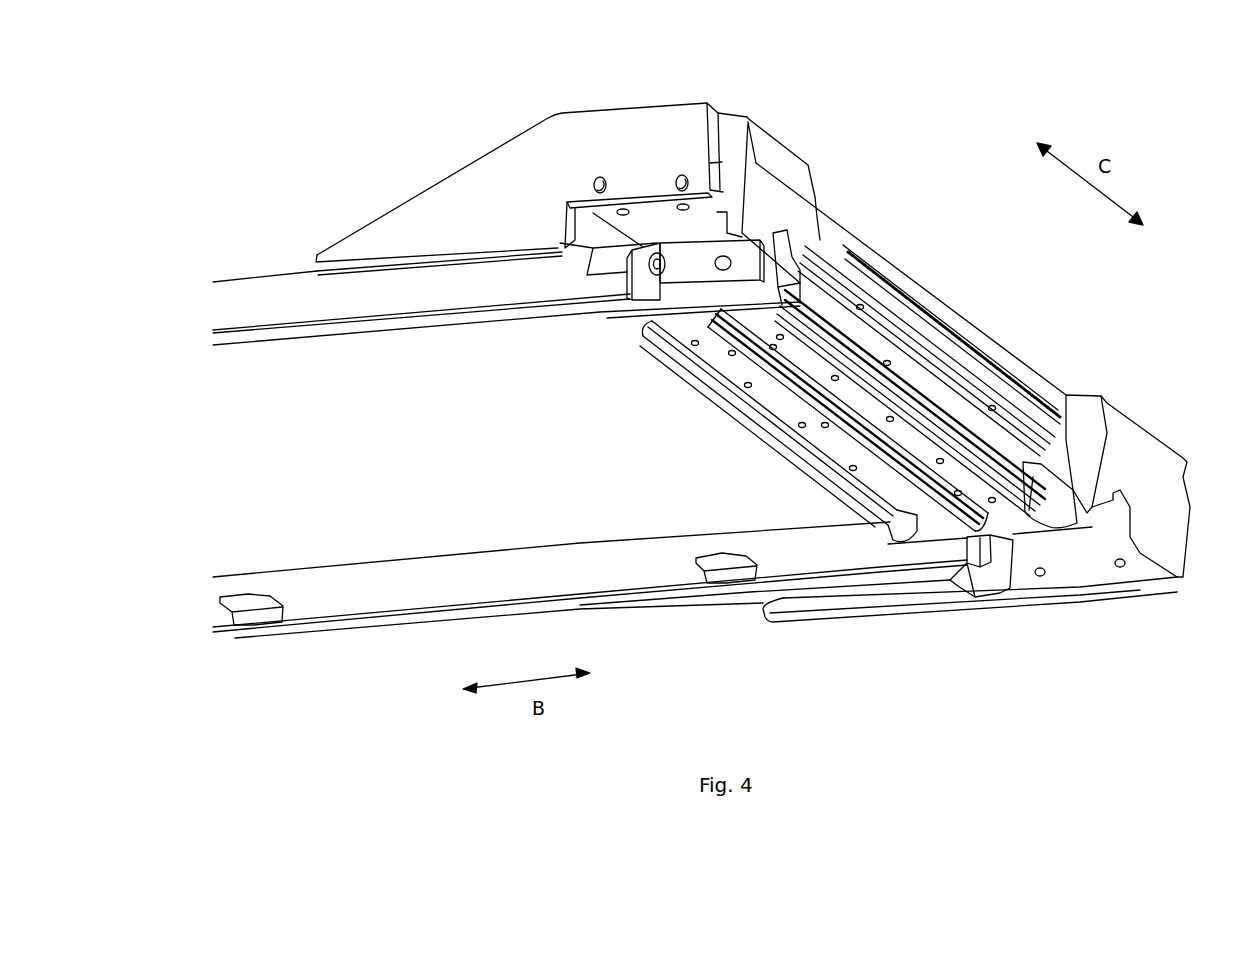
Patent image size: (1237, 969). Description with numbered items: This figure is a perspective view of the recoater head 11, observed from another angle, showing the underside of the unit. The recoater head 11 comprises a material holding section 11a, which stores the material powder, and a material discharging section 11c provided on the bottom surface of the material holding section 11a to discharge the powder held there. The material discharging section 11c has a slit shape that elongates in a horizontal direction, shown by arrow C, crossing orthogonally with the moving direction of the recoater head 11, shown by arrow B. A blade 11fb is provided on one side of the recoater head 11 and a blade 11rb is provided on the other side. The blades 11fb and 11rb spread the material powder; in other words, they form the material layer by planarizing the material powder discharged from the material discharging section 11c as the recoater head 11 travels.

The recoater head 11 is at (984, 276).
The material holding section 11a is at (717, 353).
The material discharging section 11c is at (779, 385).
The blade 11fb is at (657, 348).
The blade 11rb is at (1038, 498).